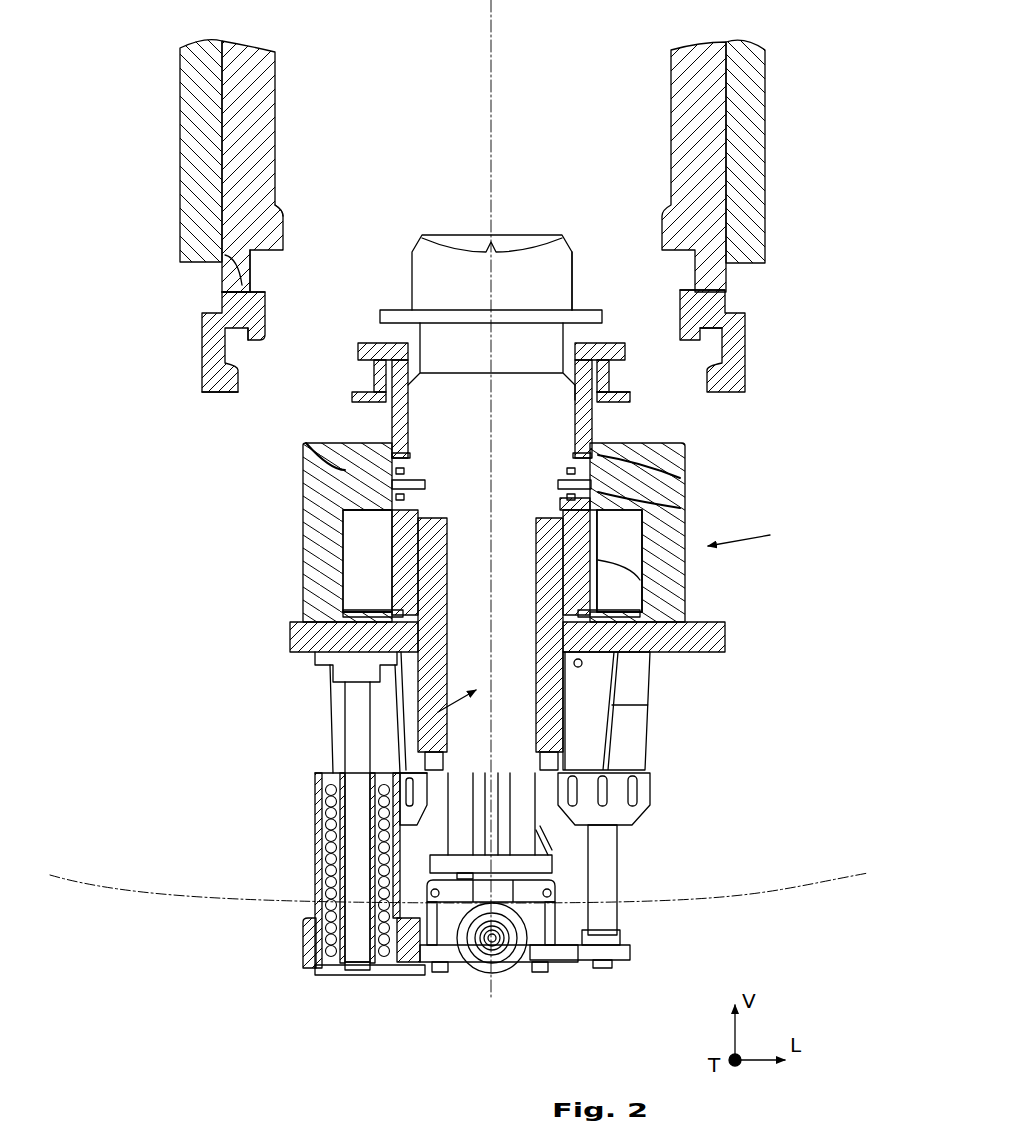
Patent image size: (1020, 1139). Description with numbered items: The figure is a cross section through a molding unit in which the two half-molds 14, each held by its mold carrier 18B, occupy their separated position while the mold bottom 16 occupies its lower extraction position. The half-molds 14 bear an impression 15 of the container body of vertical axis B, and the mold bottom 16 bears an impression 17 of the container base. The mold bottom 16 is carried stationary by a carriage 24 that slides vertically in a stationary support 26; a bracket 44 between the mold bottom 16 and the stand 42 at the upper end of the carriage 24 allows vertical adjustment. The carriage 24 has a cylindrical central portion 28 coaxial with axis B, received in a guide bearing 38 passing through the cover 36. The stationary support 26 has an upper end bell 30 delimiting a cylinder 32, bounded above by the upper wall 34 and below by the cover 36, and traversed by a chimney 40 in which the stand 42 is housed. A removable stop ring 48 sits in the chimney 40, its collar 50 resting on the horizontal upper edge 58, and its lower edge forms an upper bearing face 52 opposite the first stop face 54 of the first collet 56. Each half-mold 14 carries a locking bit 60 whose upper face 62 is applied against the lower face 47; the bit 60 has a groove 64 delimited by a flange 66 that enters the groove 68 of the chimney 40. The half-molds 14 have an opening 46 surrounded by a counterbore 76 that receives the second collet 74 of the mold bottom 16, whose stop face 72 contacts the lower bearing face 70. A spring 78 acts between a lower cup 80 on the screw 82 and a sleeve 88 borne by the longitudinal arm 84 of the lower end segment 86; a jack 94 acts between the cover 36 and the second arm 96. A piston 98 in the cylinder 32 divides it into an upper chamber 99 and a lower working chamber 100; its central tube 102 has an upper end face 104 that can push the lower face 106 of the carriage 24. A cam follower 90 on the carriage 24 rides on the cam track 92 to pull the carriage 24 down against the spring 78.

The vertical axis B is at (491, 78).
The half-mold 14 is at (248, 146).
The impression 15 is at (476, 164).
The mold bottom 16 is at (497, 279).
The impression 17 is at (515, 243).
The mold carrier 18B is at (200, 145).
The carriage 24 is at (432, 712).
The stationary support 26 is at (761, 535).
The cylindrical central portion 28 is at (372, 640).
The upper end bell 30 is at (306, 532).
The cylinder 32 is at (372, 556).
The upper wall 34 is at (343, 518).
The lower horizontal cover 36 is at (722, 632).
The guide bearing 38 is at (395, 748).
The chimney 40 is at (685, 525).
The stand 42 is at (395, 410).
The bracket 44 is at (452, 342).
The vertical cylindrical opening 46 is at (283, 228).
The lower face 47 is at (222, 302).
The stop ring 48 is at (595, 350).
The collar 50 is at (700, 345).
The upper bearing face 52 is at (400, 430).
The first stop face 54 is at (640, 452).
The first collet 56 is at (605, 532).
The upper edge 58 is at (378, 350).
The locking bit 60 is at (210, 352).
The upper face 62 is at (225, 254).
The groove 64 is at (240, 352).
The flange 66 is at (212, 383).
The groove 68 is at (612, 372).
The lower bearing face 70 is at (252, 292).
The stop face 72 is at (602, 340).
The second collet 74 is at (578, 310).
The counterbore 76 is at (255, 260).
The spring 78 is at (319, 880).
The lower cup 80 is at (332, 978).
The screw 82 is at (355, 832).
The longitudinal arm 84 is at (308, 945).
The lower end segment 86 is at (437, 960).
The sleeve 88 is at (328, 890).
The cam follower 90 is at (504, 955).
The cam track 92 is at (135, 893).
The jack 94 is at (600, 700).
The second arm 96 is at (630, 953).
The piston 98 is at (372, 598).
The upper chamber 99 is at (625, 560).
The lower working chamber 100 is at (632, 620).
The central tube 102 is at (600, 545).
The upper end face 104 is at (556, 500).
The lower face 106 is at (332, 486).